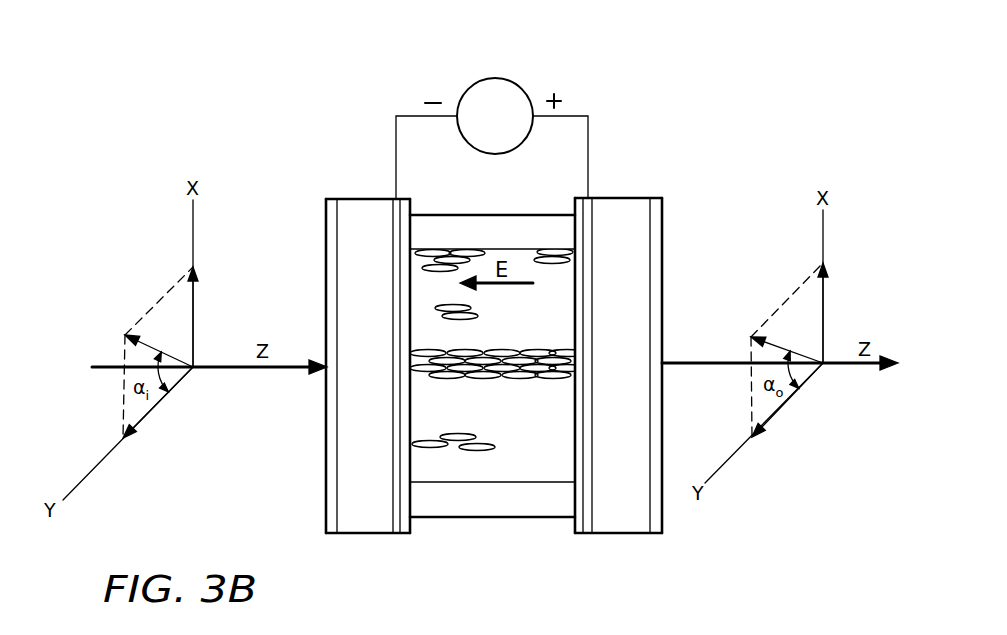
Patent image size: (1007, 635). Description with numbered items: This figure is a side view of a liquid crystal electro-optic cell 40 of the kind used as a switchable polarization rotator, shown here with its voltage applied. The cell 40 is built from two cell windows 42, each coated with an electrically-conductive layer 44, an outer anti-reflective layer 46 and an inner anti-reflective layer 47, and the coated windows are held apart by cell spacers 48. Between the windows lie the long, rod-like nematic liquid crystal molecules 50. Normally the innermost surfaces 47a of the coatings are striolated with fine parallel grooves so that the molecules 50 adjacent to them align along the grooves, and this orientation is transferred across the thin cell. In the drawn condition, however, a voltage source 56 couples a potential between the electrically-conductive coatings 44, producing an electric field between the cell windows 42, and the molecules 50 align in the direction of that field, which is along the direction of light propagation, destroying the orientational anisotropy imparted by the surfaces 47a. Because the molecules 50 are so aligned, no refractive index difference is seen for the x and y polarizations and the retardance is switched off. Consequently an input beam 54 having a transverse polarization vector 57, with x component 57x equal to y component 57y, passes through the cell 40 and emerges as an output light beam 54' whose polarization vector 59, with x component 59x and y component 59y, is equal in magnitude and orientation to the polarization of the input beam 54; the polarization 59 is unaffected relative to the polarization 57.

The liquid crystal electro-optic cell 40 is at (696, 97).
The cell windows 42 is at (364, 527).
The electrically-conductive layers 44 is at (400, 527).
The anti-reflective layers 46 is at (330, 527).
The anti-reflective layers 47 is at (405, 528).
The innermost surfaces 47a is at (410, 465).
The cell spacers 48 is at (521, 226).
The liquid crystal molecules 50 is at (503, 350).
The input beam 54 is at (209, 385).
The output light beam 54' is at (780, 384).
The voltage source 56 is at (505, 78).
The transverse polarization vector 57 is at (152, 350).
The x component 57x is at (196, 306).
The y component 57y is at (158, 410).
The polarization vector 59 is at (773, 344).
The x component 59x is at (825, 305).
The y component 59y is at (781, 409).